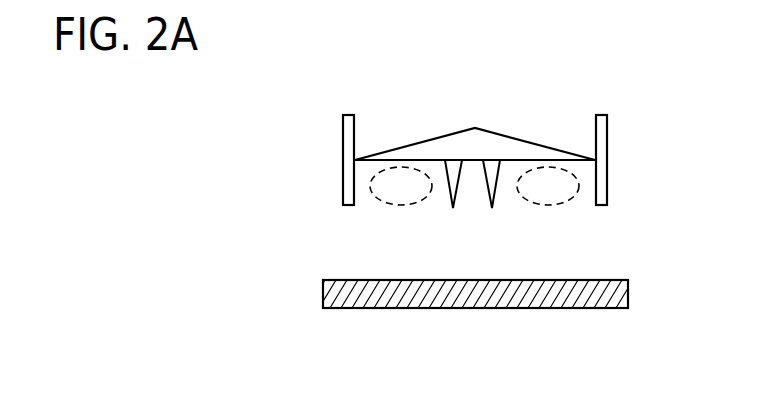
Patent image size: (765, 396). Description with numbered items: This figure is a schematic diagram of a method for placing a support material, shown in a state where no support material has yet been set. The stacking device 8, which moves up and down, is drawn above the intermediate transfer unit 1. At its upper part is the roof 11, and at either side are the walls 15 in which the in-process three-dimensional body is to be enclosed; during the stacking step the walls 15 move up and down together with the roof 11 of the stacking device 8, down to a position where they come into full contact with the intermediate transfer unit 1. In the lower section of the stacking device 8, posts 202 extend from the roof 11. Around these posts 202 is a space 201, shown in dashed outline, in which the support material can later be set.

The intermediate transfer unit 1 is at (610, 280).
The stacking device 8 is at (388, 92).
The roof 11 is at (467, 136).
The walls 15 is at (350, 156).
The space 201 is at (404, 180).
The posts 202 is at (457, 178).